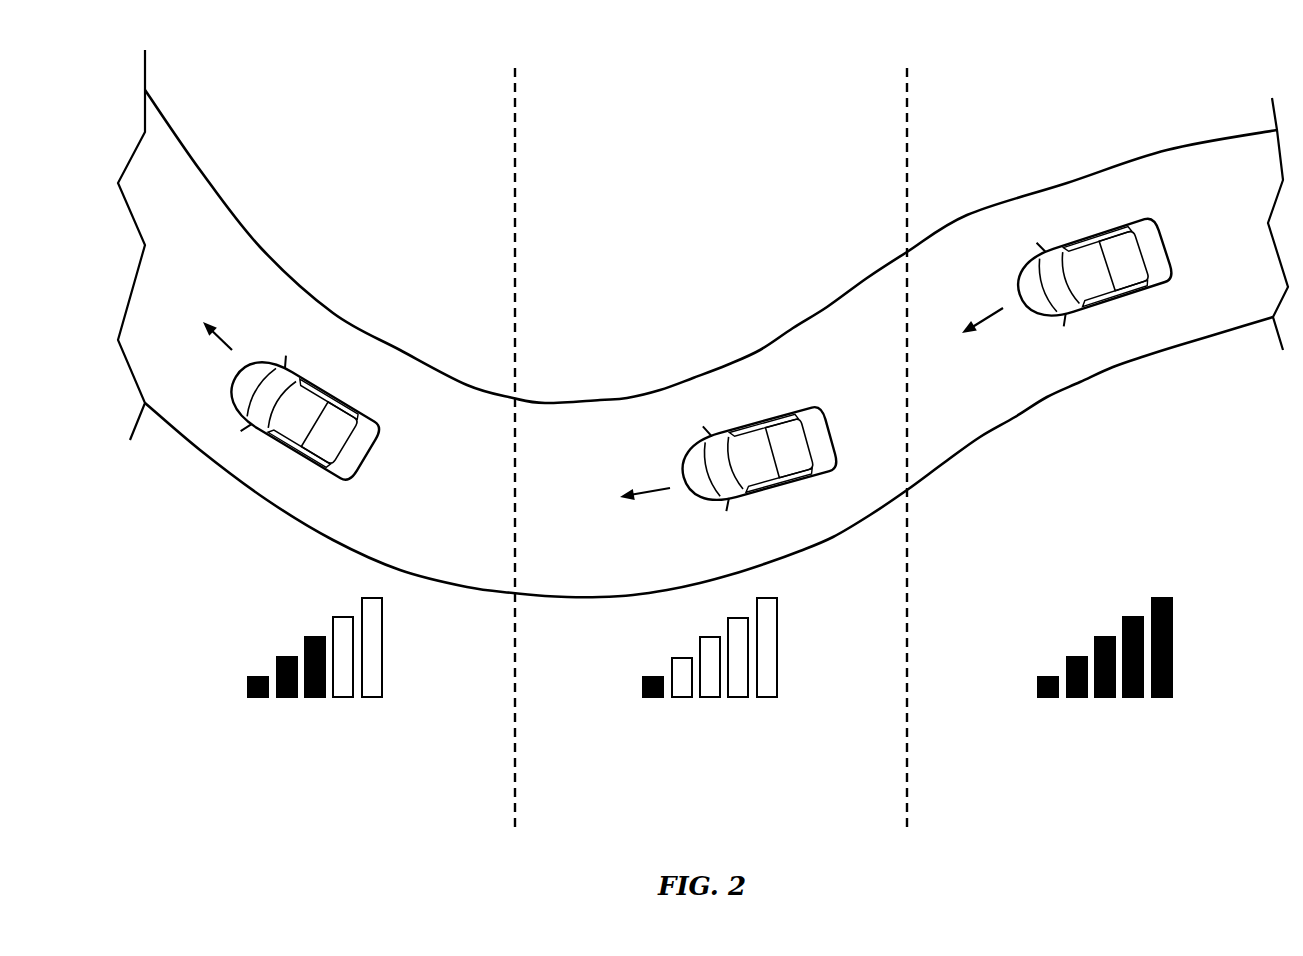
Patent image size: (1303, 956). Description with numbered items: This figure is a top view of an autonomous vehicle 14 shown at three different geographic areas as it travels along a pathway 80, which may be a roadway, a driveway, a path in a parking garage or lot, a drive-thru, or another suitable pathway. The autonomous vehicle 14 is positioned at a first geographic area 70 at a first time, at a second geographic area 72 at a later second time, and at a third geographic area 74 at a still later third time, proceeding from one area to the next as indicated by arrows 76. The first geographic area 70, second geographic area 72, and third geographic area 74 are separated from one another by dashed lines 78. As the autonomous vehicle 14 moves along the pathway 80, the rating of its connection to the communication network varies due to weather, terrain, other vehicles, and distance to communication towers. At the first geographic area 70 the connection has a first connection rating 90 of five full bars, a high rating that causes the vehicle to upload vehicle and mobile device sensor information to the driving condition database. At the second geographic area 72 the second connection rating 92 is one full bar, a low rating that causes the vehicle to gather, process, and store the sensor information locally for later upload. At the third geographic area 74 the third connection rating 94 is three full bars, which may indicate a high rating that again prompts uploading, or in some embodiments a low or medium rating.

The autonomous vehicle 14 is at (324, 389).
The first geographic area 70 is at (703, 323).
The second geographic area 72 is at (737, 283).
The third geographic area 74 is at (324, 238).
The arrows 76 is at (218, 345).
The dashed lines 78 is at (517, 143).
The pathway 80 is at (568, 397).
The first connection rating 90 is at (1116, 716).
The second connection rating 92 is at (732, 716).
The third connection rating 94 is at (331, 716).